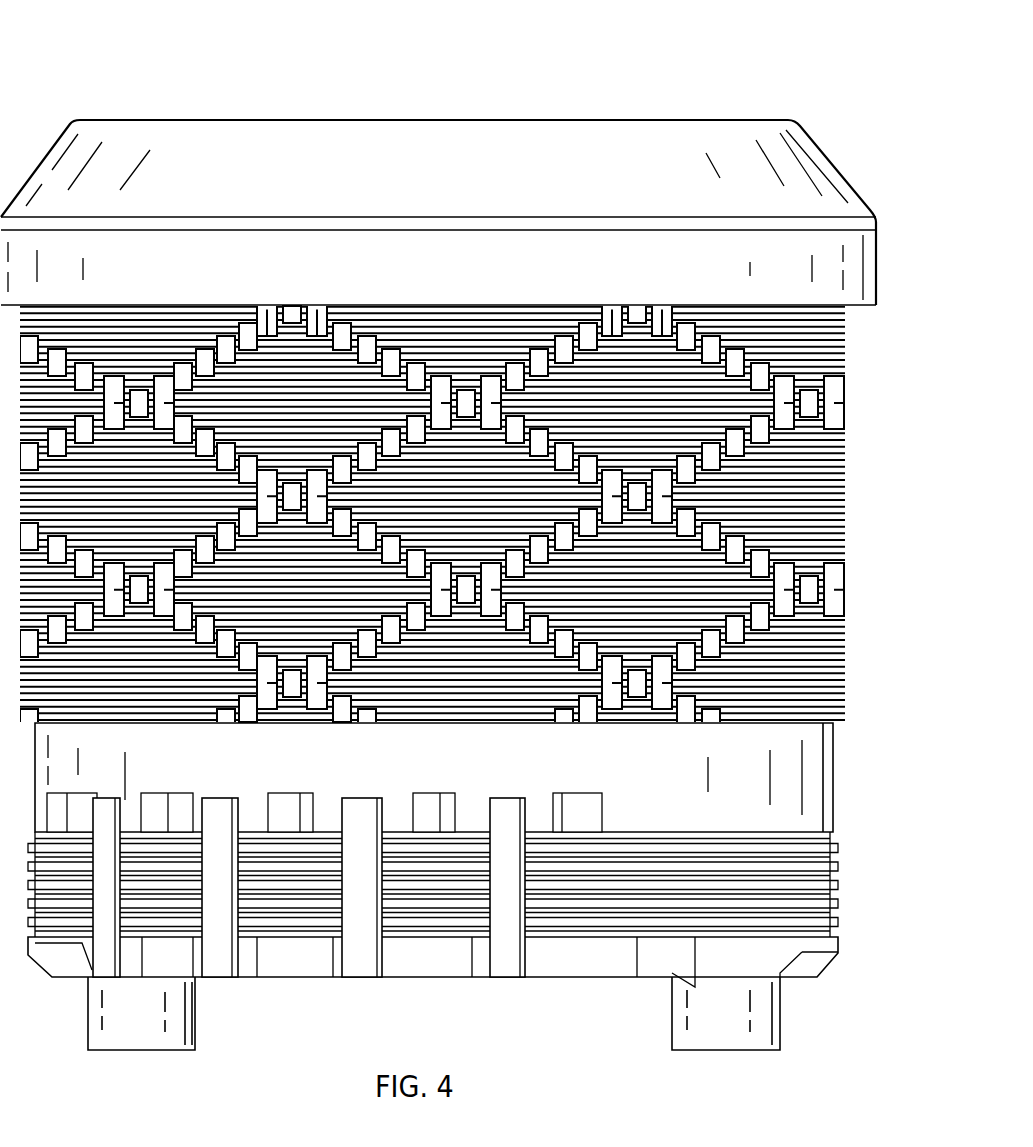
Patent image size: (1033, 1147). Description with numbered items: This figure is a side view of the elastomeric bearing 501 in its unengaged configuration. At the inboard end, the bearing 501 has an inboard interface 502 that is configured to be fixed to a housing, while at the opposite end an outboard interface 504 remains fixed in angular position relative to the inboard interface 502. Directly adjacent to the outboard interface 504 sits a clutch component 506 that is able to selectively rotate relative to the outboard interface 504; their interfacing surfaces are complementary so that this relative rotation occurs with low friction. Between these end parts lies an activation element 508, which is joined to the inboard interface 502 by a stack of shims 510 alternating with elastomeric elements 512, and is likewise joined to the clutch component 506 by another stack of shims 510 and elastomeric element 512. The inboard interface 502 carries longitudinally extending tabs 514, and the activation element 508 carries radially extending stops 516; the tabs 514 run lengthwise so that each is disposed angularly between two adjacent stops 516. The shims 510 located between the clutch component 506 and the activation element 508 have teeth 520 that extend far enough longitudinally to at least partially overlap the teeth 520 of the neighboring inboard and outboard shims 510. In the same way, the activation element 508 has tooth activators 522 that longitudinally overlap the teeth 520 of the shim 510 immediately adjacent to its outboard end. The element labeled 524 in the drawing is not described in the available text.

The bearing 501 is at (166, 66).
The inboard interface 502 is at (598, 965).
The outboard interface 504 is at (666, 120).
The clutch component 506 is at (590, 250).
The activation element 508 is at (823, 776).
The shims 510 is at (418, 318).
The elastomeric element 512 is at (508, 318).
The tabs 514 is at (218, 958).
The stops 516 is at (287, 805).
The teeth 520 is at (214, 345).
The tooth activators 522 is at (240, 724).
The top knot 524 is at (286, 318).